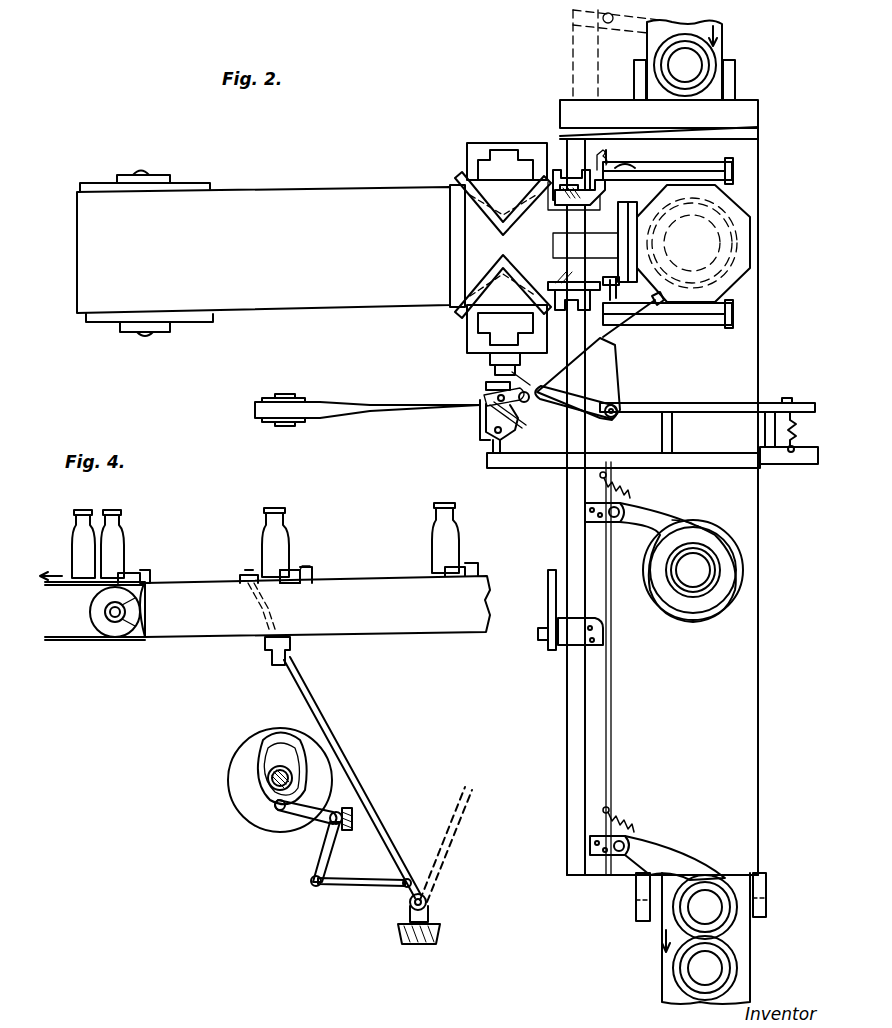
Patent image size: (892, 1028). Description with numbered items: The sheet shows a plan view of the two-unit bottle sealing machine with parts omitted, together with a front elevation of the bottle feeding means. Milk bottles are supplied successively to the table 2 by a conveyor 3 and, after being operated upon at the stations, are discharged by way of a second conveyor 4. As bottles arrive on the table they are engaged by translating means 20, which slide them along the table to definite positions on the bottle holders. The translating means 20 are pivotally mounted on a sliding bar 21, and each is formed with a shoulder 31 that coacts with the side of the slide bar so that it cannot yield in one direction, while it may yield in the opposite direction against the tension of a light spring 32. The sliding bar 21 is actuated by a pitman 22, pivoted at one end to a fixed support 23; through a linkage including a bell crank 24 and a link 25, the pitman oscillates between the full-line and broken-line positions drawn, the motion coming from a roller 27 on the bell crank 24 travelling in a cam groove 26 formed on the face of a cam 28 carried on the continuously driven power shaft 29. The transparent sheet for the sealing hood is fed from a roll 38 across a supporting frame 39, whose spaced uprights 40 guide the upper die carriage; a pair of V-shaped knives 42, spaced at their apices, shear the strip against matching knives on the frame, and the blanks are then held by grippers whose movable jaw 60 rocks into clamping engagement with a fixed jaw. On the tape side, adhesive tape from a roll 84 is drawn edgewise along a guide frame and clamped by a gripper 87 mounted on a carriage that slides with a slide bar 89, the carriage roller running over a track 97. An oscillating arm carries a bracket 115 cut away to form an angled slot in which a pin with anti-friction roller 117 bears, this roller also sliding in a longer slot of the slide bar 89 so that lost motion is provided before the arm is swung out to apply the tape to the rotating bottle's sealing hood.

In FIG. 2, the table 2 is at (752, 362).
In FIG. 4, the table 2 is at (402, 622).
In FIG. 2, the conveyor 3 is at (722, 47).
In FIG. 2, the conveyor 4 is at (735, 935).
In FIG. 4, the conveyor 4 is at (115, 642).
In FIG. 2, the translating means 20 is at (672, 498).
In FIG. 4, the translating means 20 is at (312, 572).
In FIG. 2, the sliding bar 21 is at (588, 547).
In FIG. 2, the pitman 22 is at (553, 600).
In FIG. 4, the pitman 22 is at (313, 698).
In FIG. 4, the fixed support 23 is at (430, 910).
In FIG. 4, the bell crank 24 is at (318, 855).
In FIG. 4, the link 25 is at (356, 888).
In FIG. 4, the cam groove 26 is at (260, 738).
In FIG. 4, the roller 27 is at (275, 805).
In FIG. 4, the cam 28 is at (235, 778).
In FIG. 4, the power shaft 29 is at (281, 766).
In FIG. 2, the shoulder 31 is at (590, 505).
In FIG. 2, the light spring 32 is at (625, 490).
In FIG. 2, the roll 38 is at (212, 160).
In FIG. 2, the supporting frame 39 is at (468, 137).
In FIG. 2, the uprights 40 is at (517, 135).
In FIG. 2, the V-shaped knives 42 is at (455, 185).
In FIG. 2, the movable jaw 60 is at (560, 180).
In FIG. 2, the roll of adhesive tape 84 is at (337, 388).
In FIG. 2, the gripper 87 is at (784, 398).
In FIG. 2, the slide bar 89 is at (703, 403).
In FIG. 2, the track 97 is at (788, 470).
In FIG. 2, the bracket 115 is at (596, 378).
In FIG. 2, the anti-friction roller 117 is at (613, 420).